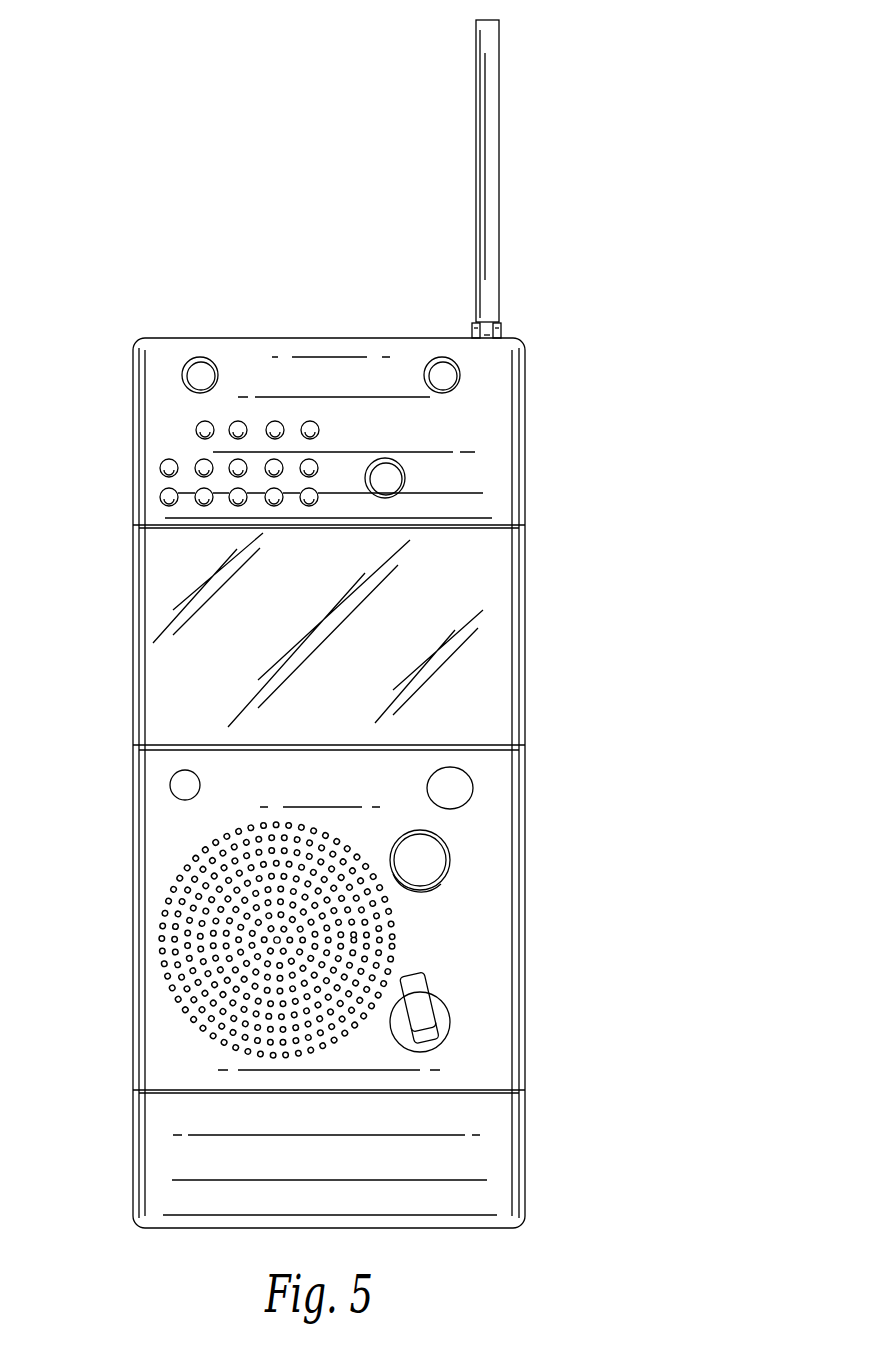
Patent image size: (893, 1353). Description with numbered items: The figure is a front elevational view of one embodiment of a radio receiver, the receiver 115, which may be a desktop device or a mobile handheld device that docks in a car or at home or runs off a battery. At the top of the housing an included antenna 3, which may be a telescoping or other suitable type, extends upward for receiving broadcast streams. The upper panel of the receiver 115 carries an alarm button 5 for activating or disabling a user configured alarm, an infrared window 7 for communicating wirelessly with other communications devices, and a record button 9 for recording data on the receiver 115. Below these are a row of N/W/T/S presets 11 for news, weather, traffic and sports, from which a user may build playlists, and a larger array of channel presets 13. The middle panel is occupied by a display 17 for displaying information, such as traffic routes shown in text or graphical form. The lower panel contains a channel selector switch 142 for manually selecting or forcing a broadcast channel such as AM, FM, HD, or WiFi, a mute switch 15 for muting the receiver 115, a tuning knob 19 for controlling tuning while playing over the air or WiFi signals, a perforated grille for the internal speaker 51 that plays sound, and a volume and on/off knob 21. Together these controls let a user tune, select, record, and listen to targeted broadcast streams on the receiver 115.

The receiver 115 is at (193, 239).
The included antenna 3 is at (495, 157).
The alarm button 5 is at (200, 357).
The infrared (IR) window 7 is at (442, 357).
The record button 9 is at (385, 458).
The N/W/T/S presets 11 is at (197, 427).
The channel presets 13 is at (160, 466).
The display 17 is at (366, 663).
The channel selector switch 142 is at (171, 782).
The mute switch 15 is at (430, 778).
The tuning knob 19 is at (422, 895).
The internal speaker 51 is at (168, 888).
The volume and on/off knob 21 is at (442, 1013).